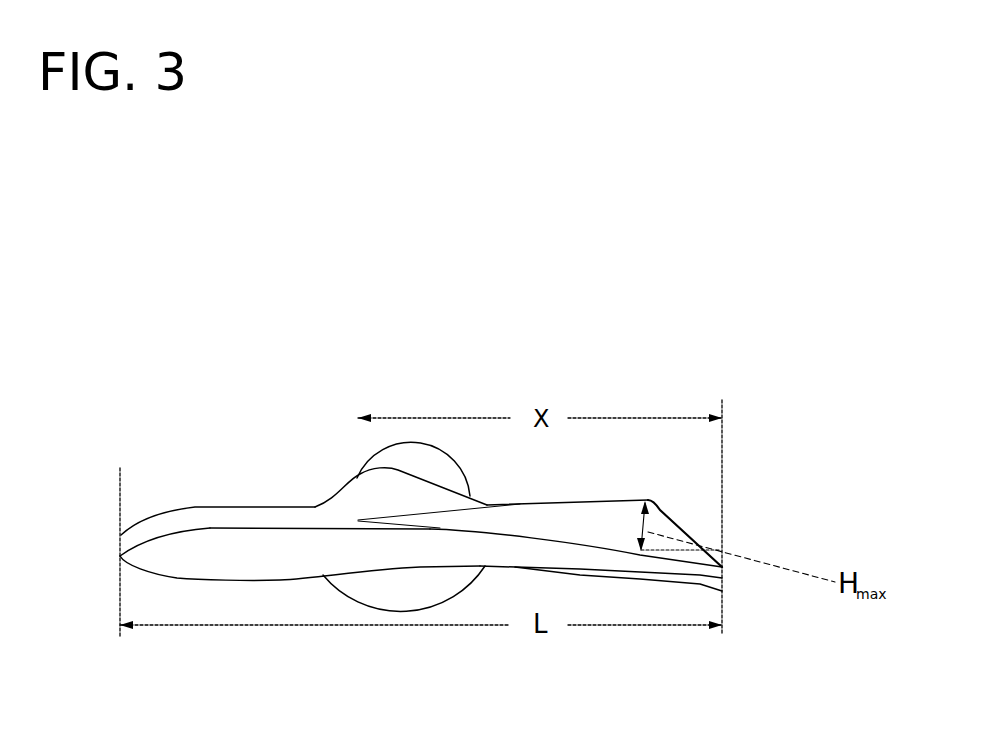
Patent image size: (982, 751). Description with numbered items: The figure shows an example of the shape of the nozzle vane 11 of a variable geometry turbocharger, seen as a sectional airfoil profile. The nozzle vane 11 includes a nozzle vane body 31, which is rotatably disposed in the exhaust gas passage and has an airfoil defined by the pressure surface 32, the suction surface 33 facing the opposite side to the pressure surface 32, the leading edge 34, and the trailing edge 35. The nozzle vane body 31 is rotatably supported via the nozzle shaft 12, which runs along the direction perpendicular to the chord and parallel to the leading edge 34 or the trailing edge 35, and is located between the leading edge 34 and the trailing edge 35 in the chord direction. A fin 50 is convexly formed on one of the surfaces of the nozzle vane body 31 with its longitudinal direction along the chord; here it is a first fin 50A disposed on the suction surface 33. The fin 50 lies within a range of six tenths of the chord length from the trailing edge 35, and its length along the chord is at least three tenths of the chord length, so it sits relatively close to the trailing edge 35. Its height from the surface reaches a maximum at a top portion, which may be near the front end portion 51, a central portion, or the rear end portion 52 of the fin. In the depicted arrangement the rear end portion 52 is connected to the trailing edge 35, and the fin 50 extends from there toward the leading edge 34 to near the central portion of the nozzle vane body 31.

The nozzle vane 11 is at (487, 217).
The nozzle shaft 12 is at (458, 478).
The nozzle vane body 31 is at (192, 515).
The pressure surface 32 is at (250, 505).
The suction surface 33 is at (260, 578).
The leading edge 34 is at (119, 537).
The trailing edge 35 is at (733, 580).
The fin 50 is at (665, 528).
The first fin 50A is at (650, 498).
The front end portion 51 is at (354, 535).
The rear end portion 52 is at (735, 572).